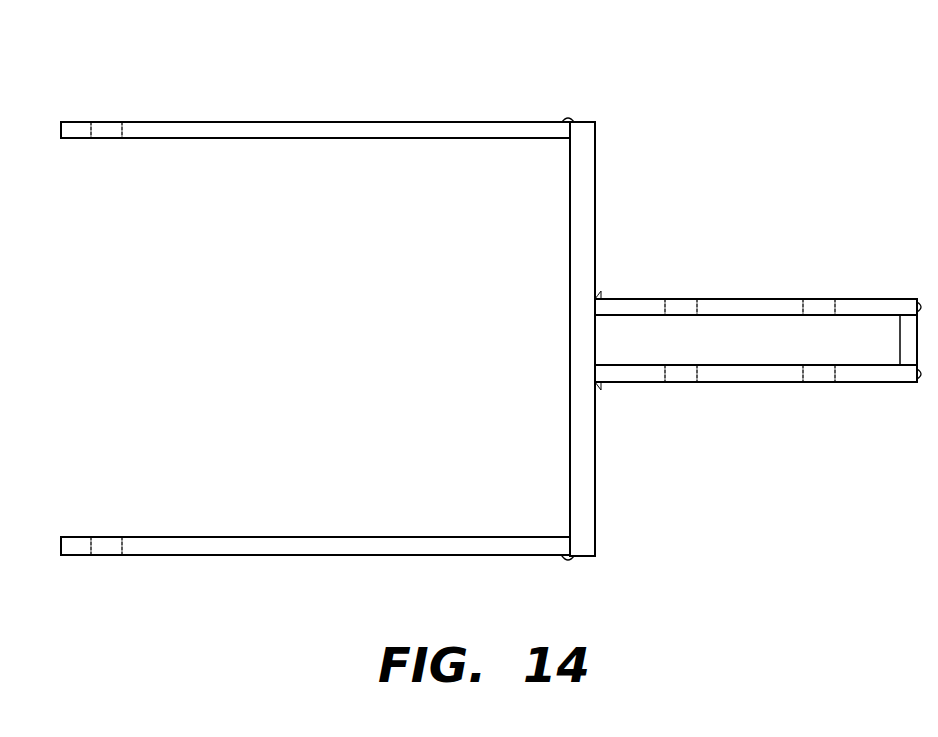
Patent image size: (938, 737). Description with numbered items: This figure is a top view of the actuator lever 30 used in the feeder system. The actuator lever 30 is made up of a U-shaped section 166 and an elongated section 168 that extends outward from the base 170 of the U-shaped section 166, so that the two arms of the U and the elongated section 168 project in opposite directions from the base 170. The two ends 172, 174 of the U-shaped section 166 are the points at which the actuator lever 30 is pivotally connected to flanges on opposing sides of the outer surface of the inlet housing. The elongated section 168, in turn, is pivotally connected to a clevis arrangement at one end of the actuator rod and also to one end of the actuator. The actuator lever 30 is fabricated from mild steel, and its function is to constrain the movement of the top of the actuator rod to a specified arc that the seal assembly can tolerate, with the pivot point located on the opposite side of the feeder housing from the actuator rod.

The actuator lever 30 is at (588, 460).
The U-shaped section 166 is at (478, 130).
The elongated section 168 is at (735, 300).
The base 170 is at (575, 243).
The end 172 is at (110, 127).
The end 174 is at (107, 544).